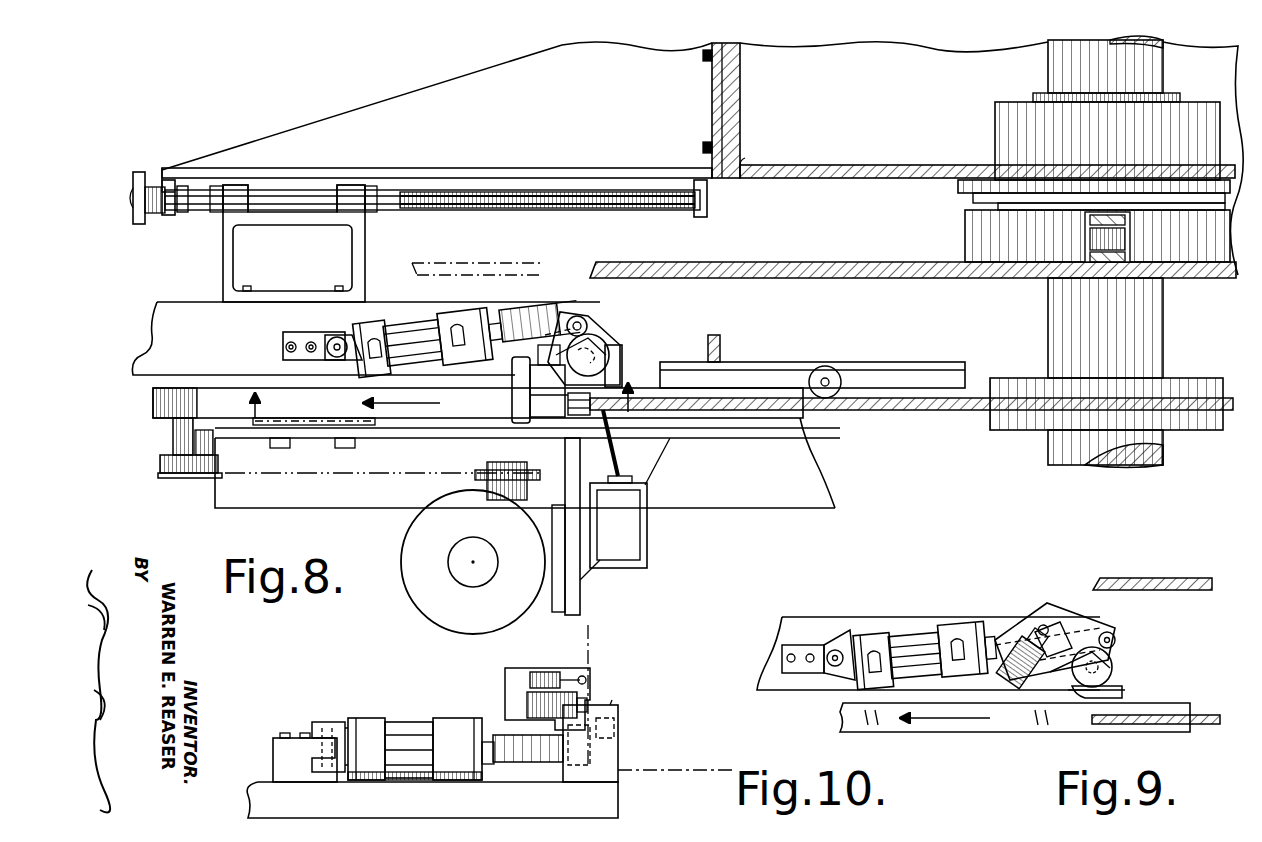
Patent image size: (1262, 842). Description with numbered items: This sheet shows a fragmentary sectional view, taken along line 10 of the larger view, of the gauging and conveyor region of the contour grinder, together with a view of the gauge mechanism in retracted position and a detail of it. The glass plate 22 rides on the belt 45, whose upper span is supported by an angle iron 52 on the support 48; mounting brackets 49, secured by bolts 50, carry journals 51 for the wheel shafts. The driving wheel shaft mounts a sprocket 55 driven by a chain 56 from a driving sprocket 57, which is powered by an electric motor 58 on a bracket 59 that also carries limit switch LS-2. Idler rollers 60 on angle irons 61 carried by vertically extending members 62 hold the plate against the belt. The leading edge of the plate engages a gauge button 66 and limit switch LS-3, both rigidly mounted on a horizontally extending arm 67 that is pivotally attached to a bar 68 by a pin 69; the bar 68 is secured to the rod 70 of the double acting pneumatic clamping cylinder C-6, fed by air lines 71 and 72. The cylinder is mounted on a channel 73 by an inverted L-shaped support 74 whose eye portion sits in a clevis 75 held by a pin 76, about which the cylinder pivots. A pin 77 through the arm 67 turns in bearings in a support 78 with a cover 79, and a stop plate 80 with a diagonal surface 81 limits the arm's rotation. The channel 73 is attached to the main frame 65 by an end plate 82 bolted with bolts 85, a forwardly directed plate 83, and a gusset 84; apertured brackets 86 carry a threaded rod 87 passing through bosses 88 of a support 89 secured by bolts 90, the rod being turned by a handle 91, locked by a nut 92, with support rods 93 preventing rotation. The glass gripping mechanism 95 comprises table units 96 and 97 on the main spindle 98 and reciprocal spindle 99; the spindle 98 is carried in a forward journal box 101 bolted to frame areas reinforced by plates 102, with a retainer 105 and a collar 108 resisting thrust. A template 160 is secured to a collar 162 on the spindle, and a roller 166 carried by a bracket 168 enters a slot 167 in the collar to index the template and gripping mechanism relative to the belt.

In FIG. 8, the section line 10— 10 is at (444, 412).
In FIG. 8, the glass plate 22 is at (960, 410).
In FIG. 10, the glass plate 22 is at (592, 635).
In FIG. 9, the glass plate 22 is at (1215, 724).
In FIG. 8, the belt 45 is at (245, 385).
In FIG. 10, the belt 45 is at (672, 770).
In FIG. 9, the belt 45 is at (950, 732).
In FIG. 8, the support 48 is at (740, 508).
In FIG. 8, the mounting brackets 49 is at (285, 418).
In FIG. 8, the bolts 50 is at (345, 448).
In FIG. 8, the journals 51 is at (170, 438).
In FIG. 8, the angle iron 52 is at (385, 425).
In FIG. 8, the sprocket 55 is at (205, 478).
In FIG. 8, the chain 56 is at (345, 473).
In FIG. 8, the driving sprocket 57 is at (540, 478).
In FIG. 8, the electric motor 58 is at (498, 630).
In FIG. 8, the bracket 59 is at (580, 575).
In FIG. 8, the idler rollers 60 is at (835, 398).
In FIG. 8, the angle irons 61 is at (930, 362).
In FIG. 8, the vertically extending members 62 is at (720, 348).
In FIG. 8, the main frame 65 is at (740, 145).
In FIG. 10, the gauge button 66 is at (590, 695).
In FIG. 8, the arm 67 is at (560, 312).
In FIG. 10, the arm 67 is at (590, 732).
In FIG. 9, the arm 67 is at (1075, 612).
In FIG. 8, the bar 68 is at (530, 312).
In FIG. 10, the bar 68 is at (525, 762).
In FIG. 9, the bar 68 is at (1115, 628).
In FIG. 8, the pin 69 is at (587, 323).
In FIG. 9, the pin 69 is at (1115, 640).
In FIG. 8, the rod 70 is at (505, 315).
In FIG. 10, the rod 70 is at (490, 740).
In FIG. 9, the rod 70 is at (998, 630).
In FIG. 8, the line 71 is at (480, 345).
In FIG. 9, the line 71 is at (955, 630).
In FIG. 8, the line 72 is at (382, 368).
In FIG. 9, the line 72 is at (862, 645).
In FIG. 8, the channel 73 is at (200, 288).
In FIG. 10, the channel 73 is at (272, 780).
In FIG. 9, the channel 73 is at (795, 617).
In FIG. 8, the L-shaped support 74 is at (300, 332).
In FIG. 10, the L-shaped support 74 is at (273, 745).
In FIG. 9, the L-shaped support 74 is at (800, 673).
In FIG. 8, the clevis 75 is at (325, 360).
In FIG. 10, the clevis 75 is at (348, 722).
In FIG. 9, the clevis 75 is at (832, 640).
In FIG. 8, the pin 76 is at (345, 360).
In FIG. 10, the pin 76 is at (338, 713).
In FIG. 9, the pin 76 is at (838, 668).
In FIG. 8, the pin 77 is at (600, 345).
In FIG. 9, the pin 77 is at (1112, 658).
In FIG. 8, the support 78 is at (622, 368).
In FIG. 9, the support 78 is at (1122, 690).
In FIG. 8, the cover 79 is at (612, 352).
In FIG. 10, the cover 79 is at (610, 705).
In FIG. 9, the cover 79 is at (1112, 670).
In FIG. 8, the stop plate 80 is at (622, 388).
In FIG. 10, the stop plate 80 is at (618, 740).
In FIG. 9, the stop plate 80 is at (1085, 695).
In FIG. 8, the diagonal surface 81 is at (588, 355).
In FIG. 9, the diagonal surface 81 is at (1068, 682).
In FIG. 8, the end plate 82 is at (712, 92).
In FIG. 8, the plate 83 is at (525, 168).
In FIG. 8, the gusset 84 is at (450, 80).
In FIG. 8, the bolts 85 is at (700, 56).
In FIG. 8, the apertured brackets 86 is at (165, 215).
In FIG. 8, the threaded rod 87 is at (518, 210).
In FIG. 8, the bosses 88 is at (238, 185).
In FIG. 8, the support 89 is at (365, 285).
In FIG. 8, the bolts 90 is at (247, 285).
In FIG. 8, the handle 91 is at (130, 172).
In FIG. 8, the nut 92 is at (205, 212).
In FIG. 8, the support rods 93 is at (378, 212).
In FIG. 8, the glass gripping mechanism 95 is at (1200, 462).
In FIG. 8, the table unit 96 is at (1215, 378).
In FIG. 8, the table unit 97 is at (1190, 430).
In FIG. 8, the main spindle 98 is at (1048, 65).
In FIG. 8, the reciprocal spindle 99 is at (1150, 448).
In FIG. 8, the forward journal box 101 is at (995, 110).
In FIG. 8, the plates 102 is at (958, 186).
In FIG. 8, the retainer 105 is at (998, 207).
In FIG. 8, the collar 108 is at (1180, 92).
In FIG. 8, the template 160 is at (900, 278).
In FIG. 9, the template 160 is at (1150, 578).
In FIG. 8, the collar 162 is at (965, 245).
In FIG. 8, the roller 166 is at (1088, 238).
In FIG. 8, the slot 167 is at (1088, 219).
In FIG. 8, the bracket 168 is at (1088, 257).
In FIG. 8, the double acting pneumatic clamping cylinder C-6 is at (415, 315).
In FIG. 10, the double acting pneumatic clamping cylinder C-6 is at (400, 718).
In FIG. 9, the double acting pneumatic clamping cylinder C-6 is at (915, 630).
In FIG. 8, the limit switch LS-2 is at (647, 545).
In FIG. 8, the limit switch LS-3 is at (540, 384).
In FIG. 10, the limit switch LS-3 is at (545, 672).
In FIG. 9, the limit switch LS-3 is at (1026, 654).